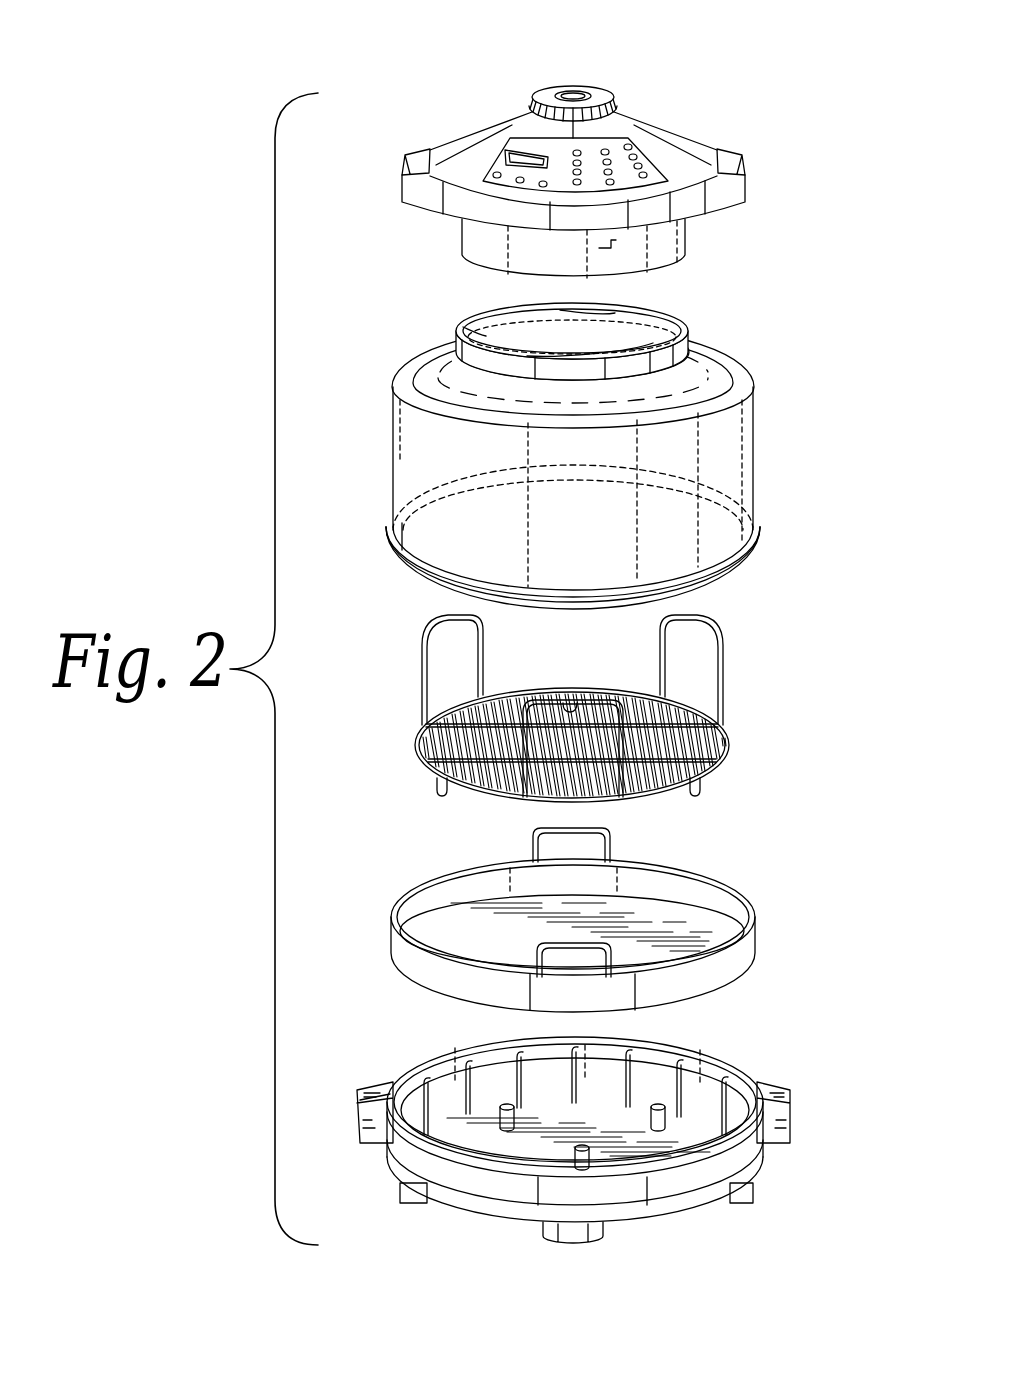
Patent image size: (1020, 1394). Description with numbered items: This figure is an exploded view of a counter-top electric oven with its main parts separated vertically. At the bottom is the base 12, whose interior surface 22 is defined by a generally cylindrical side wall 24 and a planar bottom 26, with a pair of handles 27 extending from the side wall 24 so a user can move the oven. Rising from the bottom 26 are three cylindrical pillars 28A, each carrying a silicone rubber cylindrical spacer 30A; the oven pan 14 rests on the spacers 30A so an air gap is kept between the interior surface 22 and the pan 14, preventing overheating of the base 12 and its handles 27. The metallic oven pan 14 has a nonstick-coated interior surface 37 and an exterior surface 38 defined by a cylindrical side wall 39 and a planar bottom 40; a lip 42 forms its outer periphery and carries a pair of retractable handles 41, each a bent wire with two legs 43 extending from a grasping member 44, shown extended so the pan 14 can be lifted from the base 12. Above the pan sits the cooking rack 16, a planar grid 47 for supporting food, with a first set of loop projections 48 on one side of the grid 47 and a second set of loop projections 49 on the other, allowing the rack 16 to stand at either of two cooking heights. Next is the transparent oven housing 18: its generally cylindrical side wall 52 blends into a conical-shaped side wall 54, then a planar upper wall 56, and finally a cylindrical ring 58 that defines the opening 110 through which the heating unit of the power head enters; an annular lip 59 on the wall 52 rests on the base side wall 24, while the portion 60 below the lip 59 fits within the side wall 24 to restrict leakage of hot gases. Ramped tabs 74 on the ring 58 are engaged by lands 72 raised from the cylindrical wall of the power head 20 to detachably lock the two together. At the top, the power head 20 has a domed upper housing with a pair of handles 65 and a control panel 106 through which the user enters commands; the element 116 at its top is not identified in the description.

The base 12 is at (575, 1145).
The oven pan 14 is at (576, 894).
The cooking rack 16 is at (570, 720).
The oven housing 18 is at (560, 441).
The power head 20 is at (571, 148).
The interior surface 22 is at (657, 1080).
The cylindrical side wall 24 is at (737, 1167).
The planar bottom 26 is at (362, 1090).
The handles 27 is at (786, 1092).
The cylindrical pillars 28A is at (518, 1095).
The cylindrical spacers 30A is at (503, 1115).
The interior surface 37 is at (453, 933).
The exterior surface 38 is at (400, 974).
The cylindrical side wall 39 is at (727, 963).
The planar bottom 40 is at (437, 935).
The retractable handles 41 is at (532, 914).
The lip 42 is at (567, 914).
The legs 43 is at (537, 849).
The grasping member 44 is at (532, 959).
The planar grid 47 is at (677, 717).
The first set of loop projections 48 is at (560, 700).
The second set of loop projections 49 is at (423, 668).
The cylindrical side wall 52 is at (392, 434).
The conical-shaped side wall 54 is at (415, 383).
The planar upper wall 56 is at (450, 374).
The cylindrical ring 58 is at (442, 357).
The annular lip 59 is at (386, 532).
The portion of the wall 60 is at (697, 590).
The handles 65 is at (418, 167).
The lands 72 is at (618, 240).
The ramped tabs 74 is at (490, 340).
The control panel 106 is at (498, 148).
The opening 110 is at (510, 343).
The knob / fan cover 116 is at (533, 101).